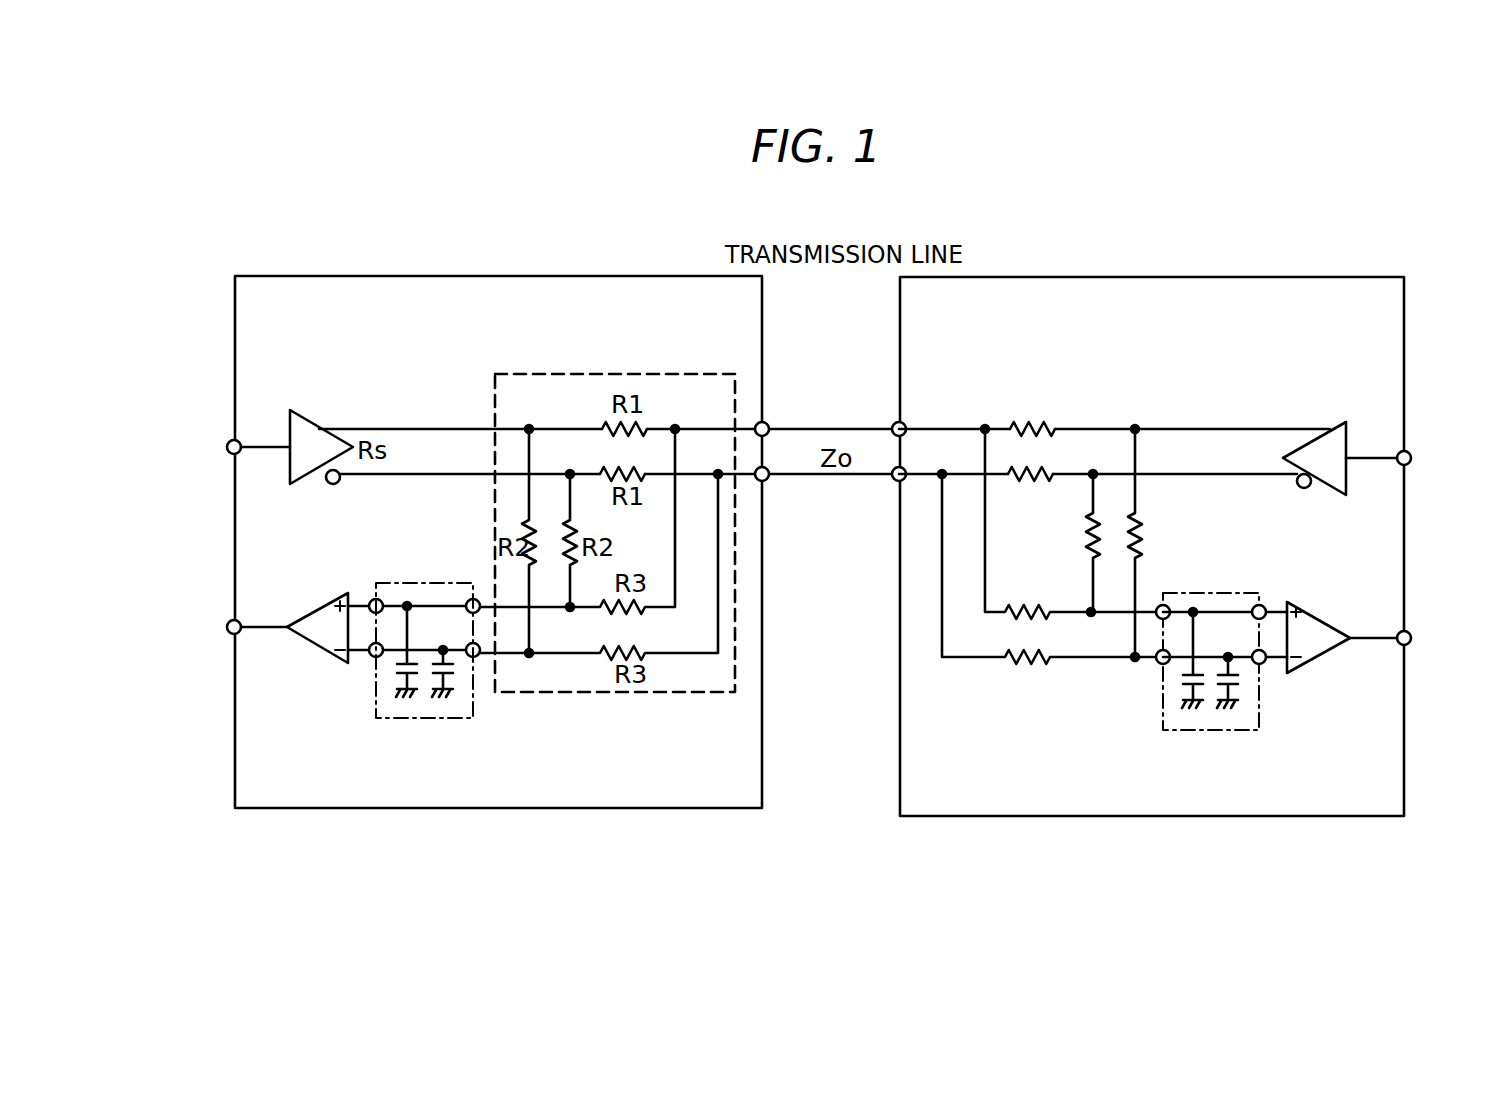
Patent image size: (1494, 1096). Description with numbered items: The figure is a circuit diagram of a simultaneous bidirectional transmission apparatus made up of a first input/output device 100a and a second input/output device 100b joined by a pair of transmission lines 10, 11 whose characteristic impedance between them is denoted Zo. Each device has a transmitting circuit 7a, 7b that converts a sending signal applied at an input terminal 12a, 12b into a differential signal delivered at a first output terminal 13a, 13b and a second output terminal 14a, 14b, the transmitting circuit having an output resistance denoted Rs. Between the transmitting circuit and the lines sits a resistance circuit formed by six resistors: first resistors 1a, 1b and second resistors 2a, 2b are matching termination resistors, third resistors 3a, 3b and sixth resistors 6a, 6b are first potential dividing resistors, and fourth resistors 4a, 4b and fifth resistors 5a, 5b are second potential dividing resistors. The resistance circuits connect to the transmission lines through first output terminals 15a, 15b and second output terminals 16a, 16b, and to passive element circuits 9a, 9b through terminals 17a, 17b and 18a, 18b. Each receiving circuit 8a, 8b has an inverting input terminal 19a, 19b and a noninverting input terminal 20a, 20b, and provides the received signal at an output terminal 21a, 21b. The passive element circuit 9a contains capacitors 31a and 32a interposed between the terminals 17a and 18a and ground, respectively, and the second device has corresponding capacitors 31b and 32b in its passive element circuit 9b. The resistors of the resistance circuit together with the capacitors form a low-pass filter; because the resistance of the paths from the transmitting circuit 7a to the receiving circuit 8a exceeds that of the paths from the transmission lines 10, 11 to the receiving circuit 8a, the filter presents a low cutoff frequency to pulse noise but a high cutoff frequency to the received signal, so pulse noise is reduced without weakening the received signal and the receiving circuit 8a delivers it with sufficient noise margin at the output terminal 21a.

The first input/output device 100a is at (455, 275).
The second input/output device 100b is at (1165, 277).
The transmission line 10 is at (833, 427).
The transmission line 11 is at (833, 478).
The passive element circuit 9a is at (443, 718).
The passive element circuit 9b is at (1180, 730).
The transmitting circuit 7a is at (305, 411).
The transmitting circuit 7b is at (1340, 422).
The receiving circuit 8a is at (301, 640).
The receiving circuit 8b is at (1330, 654).
The input terminal 12a is at (227, 447).
The input terminal 12b is at (1411, 458).
The first output terminal 13a is at (318, 428).
The first output terminal 13b is at (1320, 428).
The second output terminal 14a is at (338, 485).
The second output terminal 14b is at (1303, 488).
The first output terminal 15a is at (769, 428).
The first output terminal 15b is at (892, 428).
The second output terminal 16a is at (769, 479).
The second output terminal 16b is at (892, 479).
The first resistor 1a is at (612, 422).
The first resistor 1b is at (1028, 427).
The second resistor 2a is at (603, 468).
The second resistor 2b is at (1048, 472).
The third resistor 3a is at (527, 522).
The third resistor 3b is at (1141, 541).
The fourth resistor 4a is at (568, 522).
The fourth resistor 4b is at (1100, 521).
The fifth resistor 5a is at (608, 609).
The fifth resistor 5b is at (1038, 616).
The sixth resistor 6a is at (608, 658).
The sixth resistor 6b is at (1038, 661).
The terminal 17a is at (468, 600).
The terminal 17b is at (1168, 606).
The terminal 18a is at (480, 653).
The terminal 18b is at (1158, 662).
The inverting input terminal 19a is at (372, 600).
The inverting input terminal 19b is at (1264, 606).
The noninverting input terminal 20a is at (372, 655).
The noninverting input terminal 20b is at (1266, 663).
The output terminal 21a is at (227, 627).
The output terminal 21b is at (1411, 638).
The capacitor 31a is at (395, 670).
The capacitor 31b is at (1240, 682).
The capacitor 32a is at (455, 668).
The capacitor 32b is at (1185, 682).